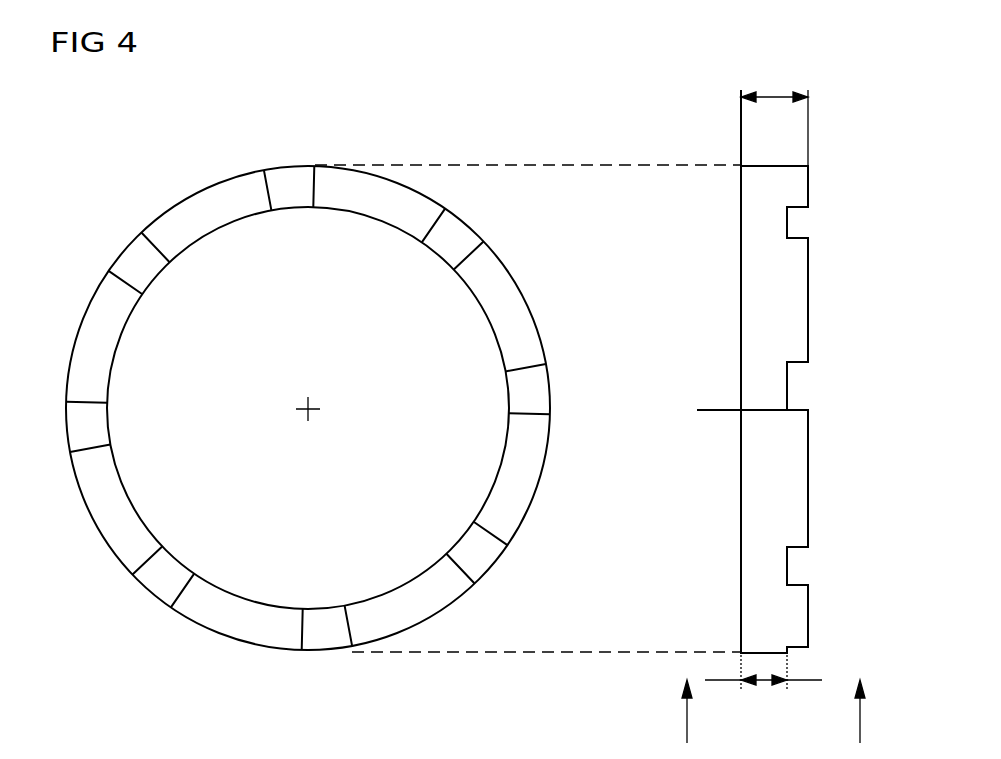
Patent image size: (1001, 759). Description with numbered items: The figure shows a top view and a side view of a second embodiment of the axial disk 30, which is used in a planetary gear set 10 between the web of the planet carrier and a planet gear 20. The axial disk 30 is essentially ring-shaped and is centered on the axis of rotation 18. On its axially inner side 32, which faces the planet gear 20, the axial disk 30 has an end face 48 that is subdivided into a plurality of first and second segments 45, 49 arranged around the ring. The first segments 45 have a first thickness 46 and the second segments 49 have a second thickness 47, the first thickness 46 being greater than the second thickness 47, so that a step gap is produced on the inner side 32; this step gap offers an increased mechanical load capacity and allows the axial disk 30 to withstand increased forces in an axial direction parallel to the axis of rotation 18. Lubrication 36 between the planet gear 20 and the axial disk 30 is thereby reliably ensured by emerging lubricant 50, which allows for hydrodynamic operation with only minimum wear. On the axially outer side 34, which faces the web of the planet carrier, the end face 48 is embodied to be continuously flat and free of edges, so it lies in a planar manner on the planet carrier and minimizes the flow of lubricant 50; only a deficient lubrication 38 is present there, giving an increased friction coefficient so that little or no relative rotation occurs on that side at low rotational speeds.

The planetary gear set 10 is at (75, 582).
The axis of rotation 18 is at (305, 412).
The planet gear 20 is at (922, 456).
The axial disk 30 is at (108, 701).
The axially inner side 32 is at (812, 180).
The axially outer side 34 is at (740, 178).
The lubrication 36 is at (922, 514).
The deficient lubrication 38 is at (675, 506).
The first segments 45 is at (221, 216).
The first thickness 46 is at (776, 96).
The second thickness 47 is at (290, 170).
The end face 48 is at (826, 238).
The second segments 49 is at (826, 207).
The lubricant 50 is at (686, 716).